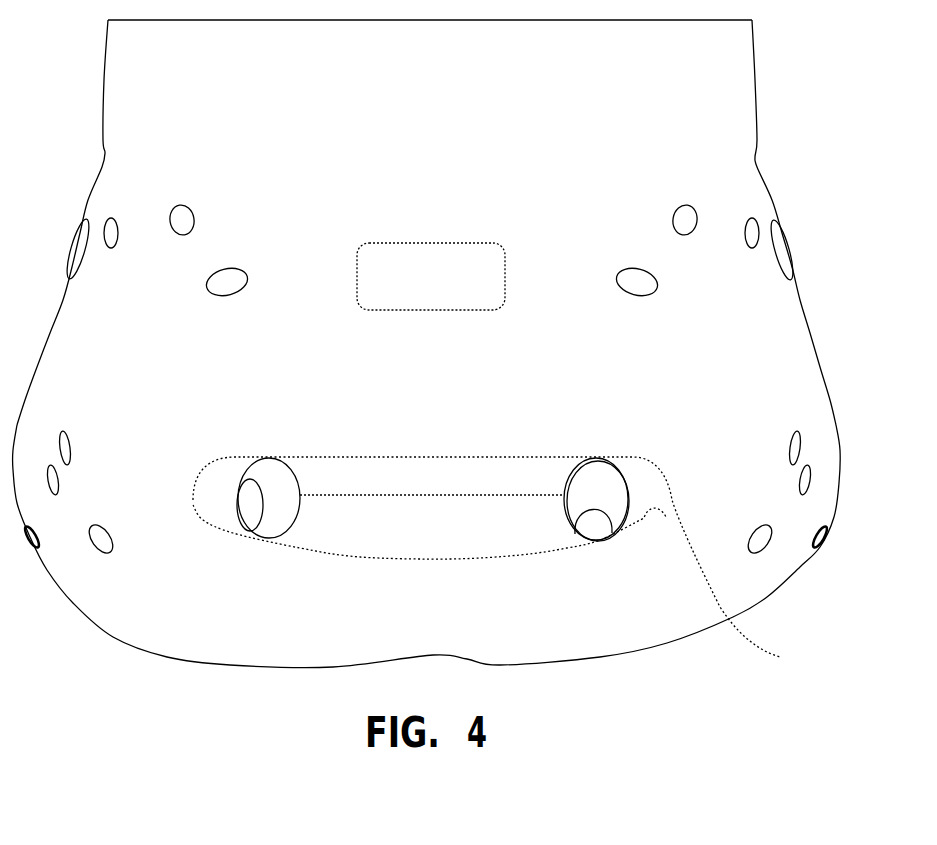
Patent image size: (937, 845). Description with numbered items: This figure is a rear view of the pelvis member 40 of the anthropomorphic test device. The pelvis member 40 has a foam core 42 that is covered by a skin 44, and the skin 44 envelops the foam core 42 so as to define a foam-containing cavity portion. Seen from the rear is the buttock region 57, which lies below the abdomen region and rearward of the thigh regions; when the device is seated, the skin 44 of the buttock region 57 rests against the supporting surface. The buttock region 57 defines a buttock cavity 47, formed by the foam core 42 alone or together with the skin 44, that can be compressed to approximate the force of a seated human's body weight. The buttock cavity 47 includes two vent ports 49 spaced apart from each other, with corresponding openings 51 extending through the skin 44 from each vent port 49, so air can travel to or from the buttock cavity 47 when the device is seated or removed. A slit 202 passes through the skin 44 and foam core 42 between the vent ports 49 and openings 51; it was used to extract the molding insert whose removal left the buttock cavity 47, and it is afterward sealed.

The pelvis member 40 is at (800, 155).
The buttock region 57 is at (663, 362).
The skin 44 is at (92, 595).
The vent port 49 is at (247, 480).
The opening 51 is at (268, 522).
The slit 202 is at (342, 496).
The foam core 42 is at (612, 533).
The buttock cavity 47 is at (498, 562).